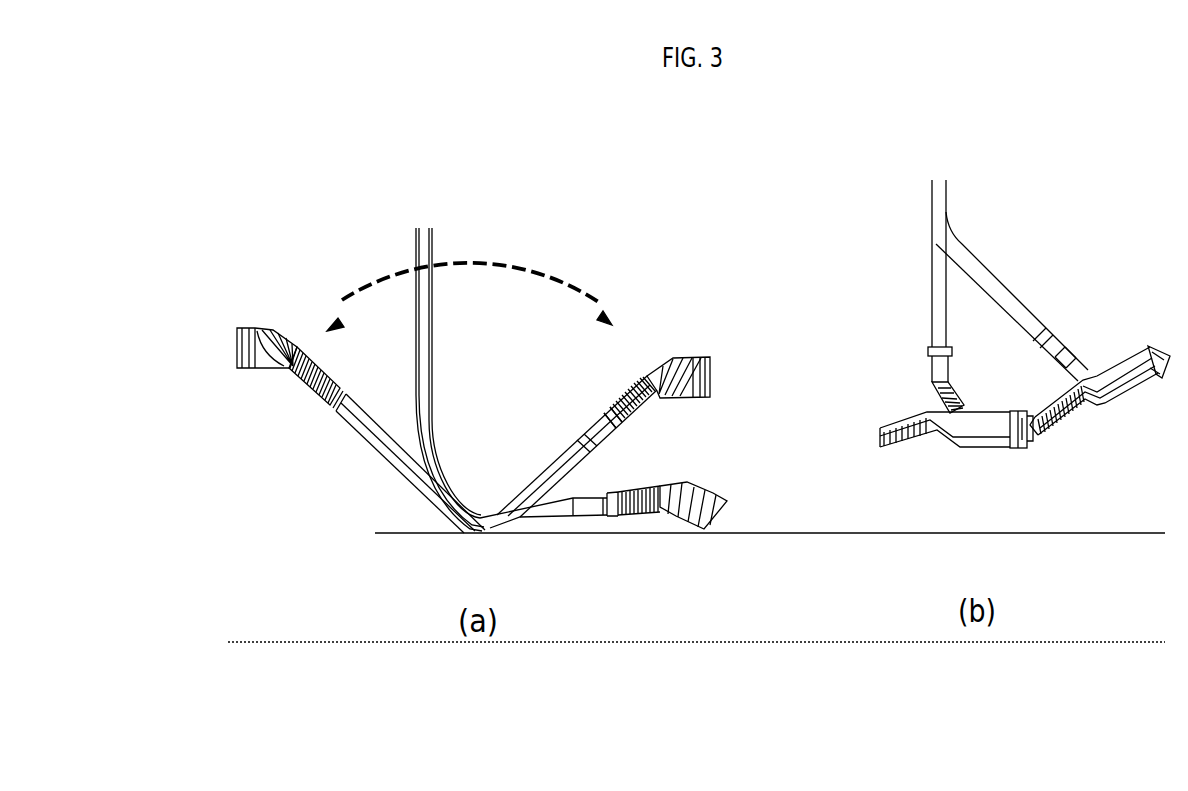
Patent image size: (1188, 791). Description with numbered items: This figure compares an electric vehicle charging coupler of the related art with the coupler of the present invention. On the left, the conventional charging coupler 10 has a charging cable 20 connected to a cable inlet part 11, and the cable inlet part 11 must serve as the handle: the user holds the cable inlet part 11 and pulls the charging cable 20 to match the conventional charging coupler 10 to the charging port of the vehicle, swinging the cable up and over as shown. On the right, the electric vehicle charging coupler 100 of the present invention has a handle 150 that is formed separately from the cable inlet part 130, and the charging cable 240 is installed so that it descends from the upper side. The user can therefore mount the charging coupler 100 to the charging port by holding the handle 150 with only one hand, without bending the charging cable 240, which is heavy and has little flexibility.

The conventional charging coupler 10 is at (703, 323).
The cable inlet part 11 is at (637, 393).
The charging cable 20 is at (458, 362).
The electric vehicle charging coupler 100 is at (1108, 425).
The cable inlet part 130 is at (1100, 340).
The handle 150 is at (1050, 430).
The charging cable 240 is at (1033, 250).